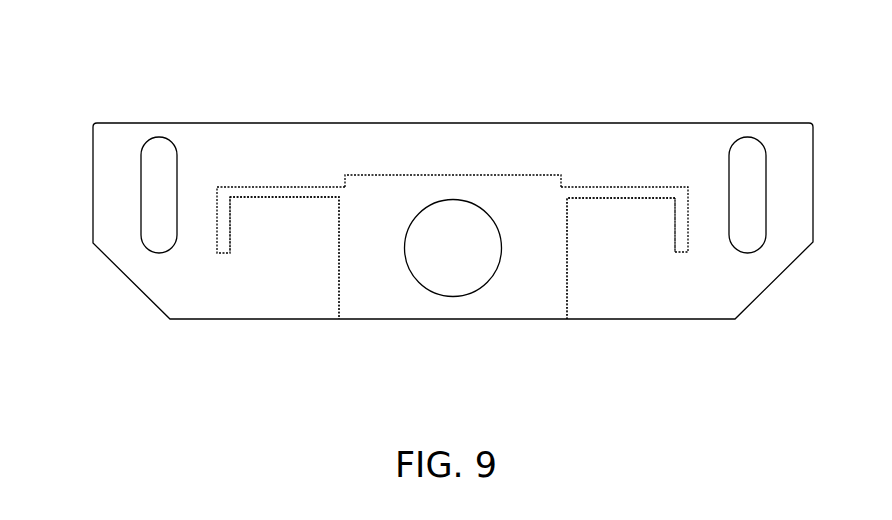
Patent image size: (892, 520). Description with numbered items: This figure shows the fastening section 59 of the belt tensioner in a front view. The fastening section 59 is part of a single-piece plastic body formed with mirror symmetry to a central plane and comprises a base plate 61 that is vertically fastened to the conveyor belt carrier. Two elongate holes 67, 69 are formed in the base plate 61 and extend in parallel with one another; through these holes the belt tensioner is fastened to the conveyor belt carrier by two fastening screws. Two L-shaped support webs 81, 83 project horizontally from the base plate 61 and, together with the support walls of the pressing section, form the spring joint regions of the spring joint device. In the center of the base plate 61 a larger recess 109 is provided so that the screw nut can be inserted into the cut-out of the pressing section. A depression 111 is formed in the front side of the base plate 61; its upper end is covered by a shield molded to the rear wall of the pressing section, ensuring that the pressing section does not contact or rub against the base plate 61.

The fastening section 59 is at (435, 250).
The base plate 61 is at (670, 303).
The elongate hole 67 is at (153, 193).
The elongate hole 69 is at (749, 197).
The L-shaped support web 81 is at (243, 191).
The L-shaped support web 83 is at (683, 218).
The recess 109 is at (448, 233).
The depression 111 is at (523, 202).